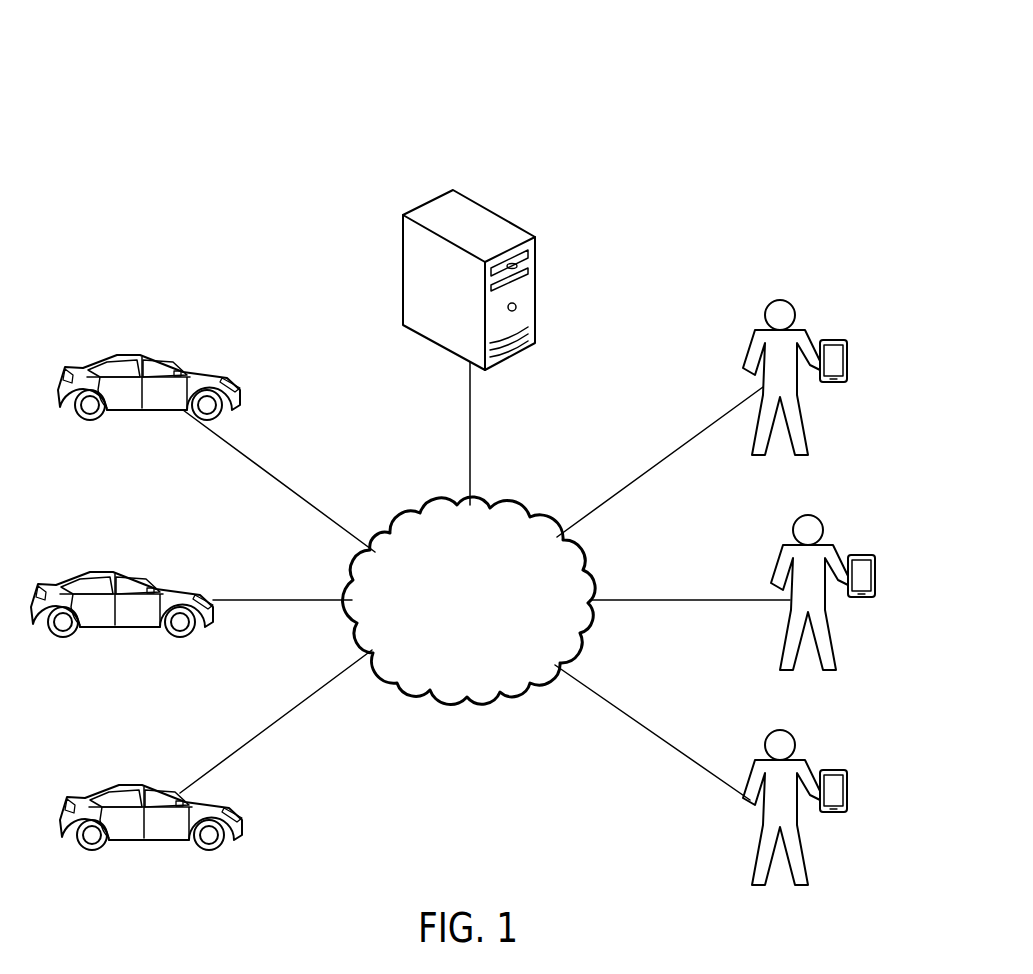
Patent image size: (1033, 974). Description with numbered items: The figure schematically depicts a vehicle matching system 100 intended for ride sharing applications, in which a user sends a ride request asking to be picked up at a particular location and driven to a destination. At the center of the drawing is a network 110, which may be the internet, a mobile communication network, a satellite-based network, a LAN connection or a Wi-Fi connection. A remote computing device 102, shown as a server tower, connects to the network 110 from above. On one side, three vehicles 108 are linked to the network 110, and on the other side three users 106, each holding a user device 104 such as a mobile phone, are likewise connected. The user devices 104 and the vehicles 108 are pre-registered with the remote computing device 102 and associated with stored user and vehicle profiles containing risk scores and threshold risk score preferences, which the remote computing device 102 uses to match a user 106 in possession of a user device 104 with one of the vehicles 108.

The vehicle matching system 100 is at (674, 96).
The remote computing device 102 is at (493, 212).
The user devices 104 is at (882, 572).
The users 106 is at (818, 587).
The vehicles 108 is at (136, 575).
The network 110 is at (492, 505).